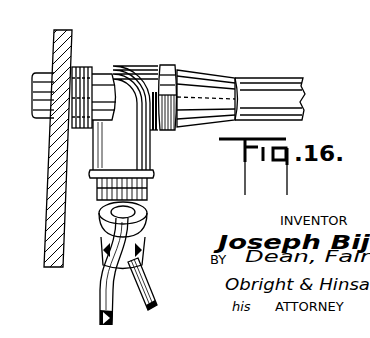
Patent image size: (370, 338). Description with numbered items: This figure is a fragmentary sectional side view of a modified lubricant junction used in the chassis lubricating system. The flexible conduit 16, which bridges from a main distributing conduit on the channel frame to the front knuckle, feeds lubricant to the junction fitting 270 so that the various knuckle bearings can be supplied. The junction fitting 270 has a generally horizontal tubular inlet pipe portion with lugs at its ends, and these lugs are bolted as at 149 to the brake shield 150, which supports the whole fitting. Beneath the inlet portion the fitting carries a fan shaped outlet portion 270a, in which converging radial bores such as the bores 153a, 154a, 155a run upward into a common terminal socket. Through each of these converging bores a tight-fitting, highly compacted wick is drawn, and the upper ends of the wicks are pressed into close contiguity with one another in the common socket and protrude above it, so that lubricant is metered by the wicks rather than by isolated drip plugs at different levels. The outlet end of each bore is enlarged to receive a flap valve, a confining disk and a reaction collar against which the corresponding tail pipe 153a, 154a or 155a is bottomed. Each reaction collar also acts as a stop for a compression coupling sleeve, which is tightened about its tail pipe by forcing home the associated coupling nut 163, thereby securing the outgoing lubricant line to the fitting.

The flexible conduit 16 is at (273, 83).
The bolt 149 is at (103, 90).
The brake shield 150 is at (72, 38).
The converging radial bore 153a is at (147, 293).
The converging radial bore 154a is at (100, 322).
The converging radial bore 155a is at (100, 293).
The coupling nut 163 is at (137, 227).
The junction fitting 270 is at (150, 152).
The fan shaped outlet portion 270a is at (143, 192).